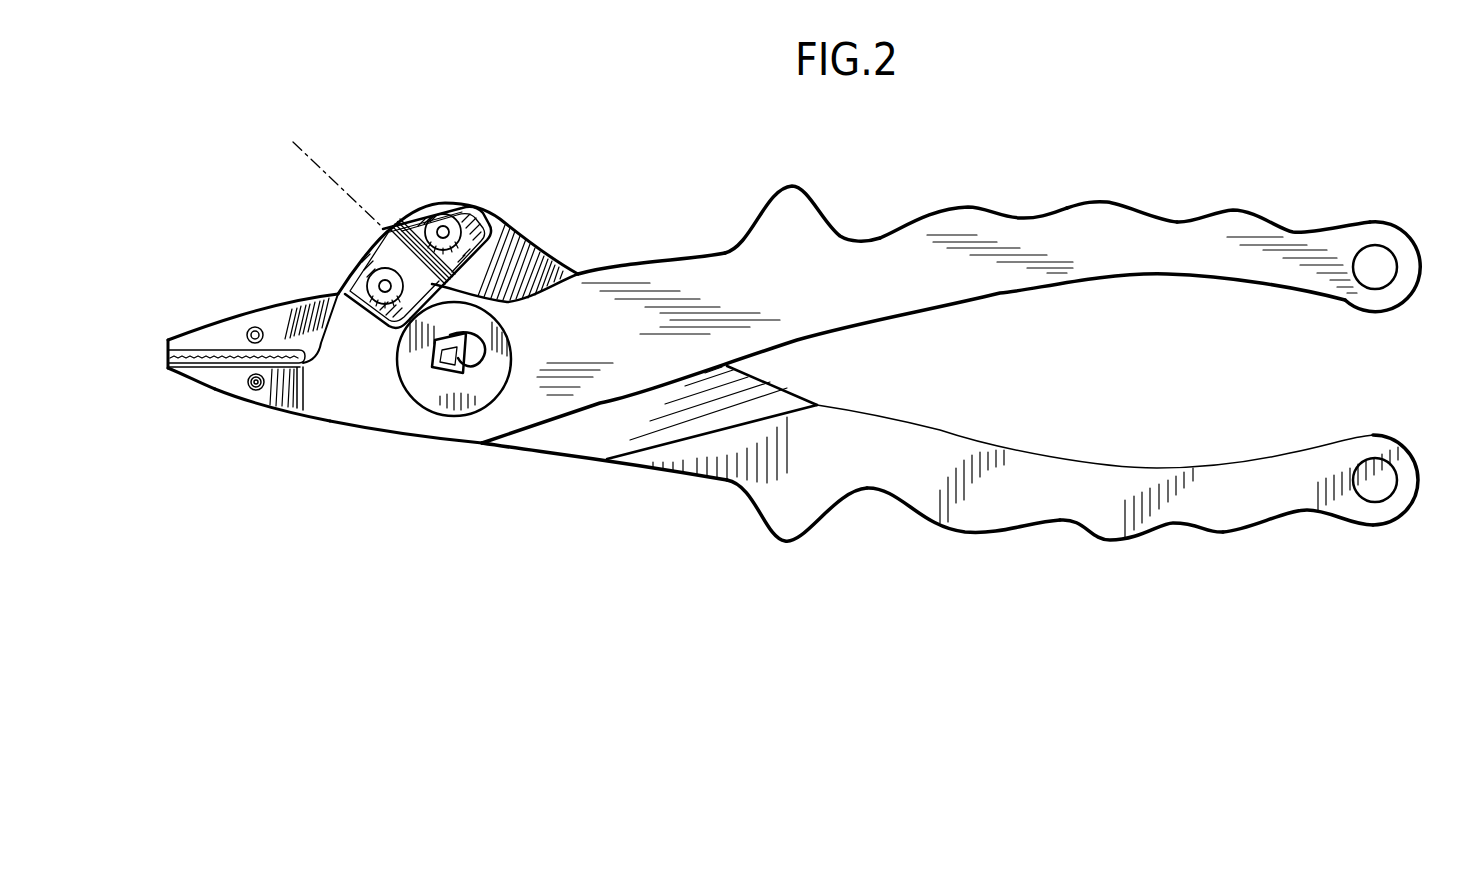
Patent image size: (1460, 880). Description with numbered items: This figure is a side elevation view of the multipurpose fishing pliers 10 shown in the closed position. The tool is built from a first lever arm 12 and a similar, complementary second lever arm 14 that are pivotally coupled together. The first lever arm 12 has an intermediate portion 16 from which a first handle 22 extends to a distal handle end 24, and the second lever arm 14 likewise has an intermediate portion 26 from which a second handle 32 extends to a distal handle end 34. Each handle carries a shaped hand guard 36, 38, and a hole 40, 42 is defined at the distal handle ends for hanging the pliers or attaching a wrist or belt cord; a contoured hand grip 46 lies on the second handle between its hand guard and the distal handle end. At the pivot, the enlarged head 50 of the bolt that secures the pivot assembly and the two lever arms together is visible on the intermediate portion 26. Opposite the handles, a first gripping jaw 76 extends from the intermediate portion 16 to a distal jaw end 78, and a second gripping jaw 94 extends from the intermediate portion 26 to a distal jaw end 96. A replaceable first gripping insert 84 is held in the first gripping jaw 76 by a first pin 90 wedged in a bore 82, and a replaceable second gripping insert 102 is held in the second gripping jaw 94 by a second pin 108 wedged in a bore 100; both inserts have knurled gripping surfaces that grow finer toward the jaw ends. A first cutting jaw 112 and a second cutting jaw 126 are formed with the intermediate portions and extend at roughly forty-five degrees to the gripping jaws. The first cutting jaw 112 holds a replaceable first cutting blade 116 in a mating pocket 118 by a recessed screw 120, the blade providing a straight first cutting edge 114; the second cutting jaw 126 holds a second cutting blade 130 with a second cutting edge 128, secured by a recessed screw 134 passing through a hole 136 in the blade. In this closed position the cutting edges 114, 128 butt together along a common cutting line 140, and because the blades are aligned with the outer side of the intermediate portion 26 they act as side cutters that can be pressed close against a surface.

The multipurpose fishing pliers 10 is at (979, 161).
The first lever arm 12 is at (937, 431).
The second lever arm 14 is at (866, 241).
The intermediate portion 16 is at (558, 280).
The first handle 22 is at (1108, 458).
The distal handle end 24 is at (1403, 442).
The intermediate portion 26 is at (508, 438).
The second handle 32 is at (1092, 285).
The distal handle end 34 is at (1412, 258).
The hand guard 36 is at (786, 545).
The hand guard 38 is at (795, 187).
The hole 40 is at (1385, 502).
The hole 42 is at (1377, 290).
The contoured hand grip 46 is at (1108, 202).
The enlarged head 50 is at (427, 405).
The first gripping jaw 76 is at (220, 318).
The distal jaw end 78 is at (186, 326).
The bore 82 is at (257, 327).
The first gripping insert 84 is at (166, 342).
The first pin 90 is at (250, 327).
The second gripping jaw 94 is at (238, 400).
The distal jaw end 96 is at (190, 385).
The bore 100 is at (263, 388).
The second gripping insert 102 is at (165, 369).
The second pin 108 is at (256, 391).
The first cutting jaw 112 is at (535, 238).
The first cutting edge 114 is at (408, 240).
The first cutting blade 116 is at (445, 210).
The mating pocket 118 is at (500, 220).
The recessed screw 120 is at (470, 207).
The second cutting jaw 126 is at (345, 290).
The second cutting edge 128 is at (390, 232).
The second cutting blade 130 is at (363, 293).
The recessed screw 134 is at (385, 322).
The hole 136 is at (385, 330).
The common cutting line 140 is at (297, 146).